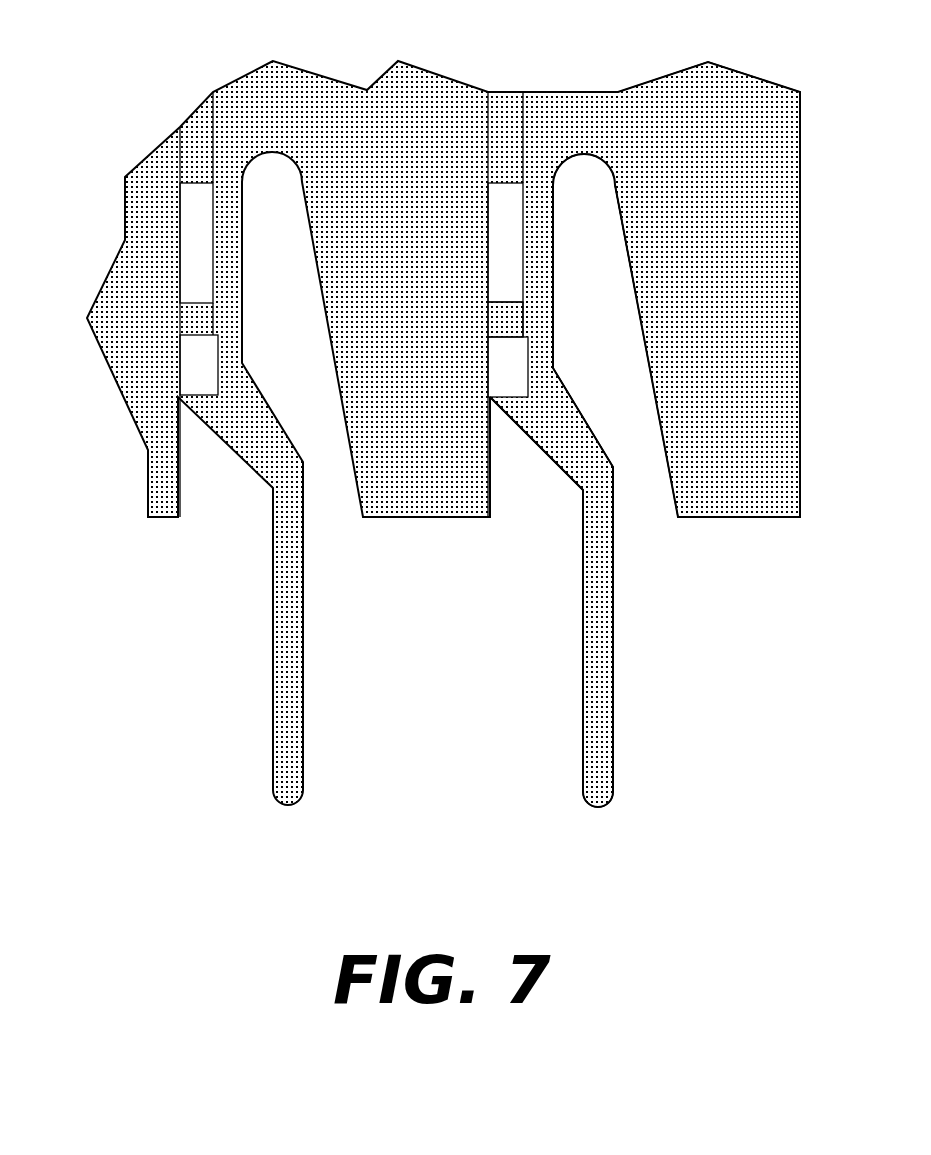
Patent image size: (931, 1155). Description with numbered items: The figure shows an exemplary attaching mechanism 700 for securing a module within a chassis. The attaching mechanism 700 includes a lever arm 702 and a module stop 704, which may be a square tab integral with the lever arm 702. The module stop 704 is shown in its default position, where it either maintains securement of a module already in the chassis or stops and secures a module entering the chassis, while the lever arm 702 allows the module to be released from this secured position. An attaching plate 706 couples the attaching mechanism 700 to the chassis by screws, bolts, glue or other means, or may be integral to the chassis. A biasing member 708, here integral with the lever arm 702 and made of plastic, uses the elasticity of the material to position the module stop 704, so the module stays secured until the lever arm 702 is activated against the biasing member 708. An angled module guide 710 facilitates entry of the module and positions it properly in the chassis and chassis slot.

The attaching mechanism 700 is at (131, 834).
The lever arm 702 is at (613, 715).
The module stop 704 is at (503, 337).
The attaching plate 706 is at (753, 520).
The biasing member 708 is at (553, 230).
The module guide 710 is at (540, 448).